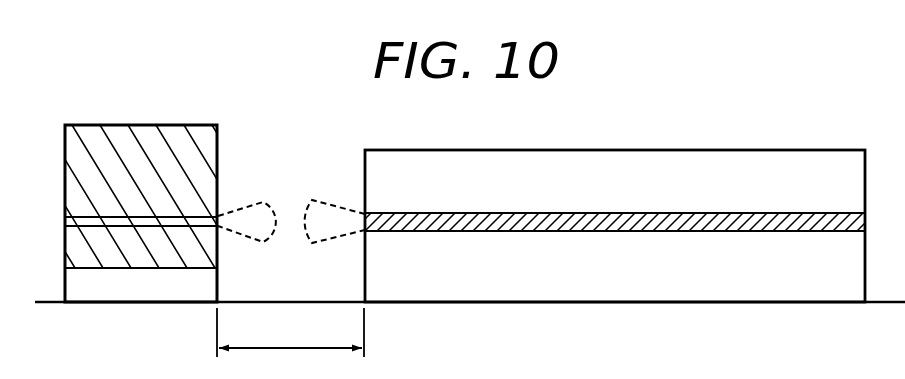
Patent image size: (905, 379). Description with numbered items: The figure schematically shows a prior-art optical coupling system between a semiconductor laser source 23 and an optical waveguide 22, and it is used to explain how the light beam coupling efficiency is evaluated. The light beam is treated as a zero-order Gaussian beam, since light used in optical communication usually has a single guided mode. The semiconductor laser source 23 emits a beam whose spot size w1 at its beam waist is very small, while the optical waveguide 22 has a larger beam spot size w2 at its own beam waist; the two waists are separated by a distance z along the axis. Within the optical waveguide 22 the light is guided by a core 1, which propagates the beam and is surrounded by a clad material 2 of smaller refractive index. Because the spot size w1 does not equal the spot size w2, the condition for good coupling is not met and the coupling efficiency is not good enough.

The core 1 is at (602, 233).
The clad material 2 is at (718, 293).
The optical waveguide 22 is at (866, 146).
The semiconductor laser source 23 is at (149, 136).
The beam spot size W1 w1 is at (217, 218).
The beam spot size W2 w2 is at (365, 218).
The distance Z between the beam waists z is at (290, 332).